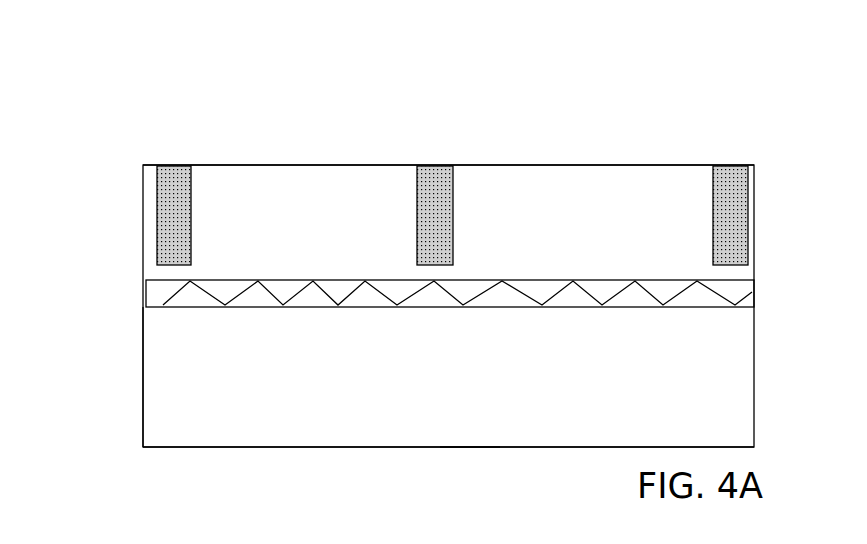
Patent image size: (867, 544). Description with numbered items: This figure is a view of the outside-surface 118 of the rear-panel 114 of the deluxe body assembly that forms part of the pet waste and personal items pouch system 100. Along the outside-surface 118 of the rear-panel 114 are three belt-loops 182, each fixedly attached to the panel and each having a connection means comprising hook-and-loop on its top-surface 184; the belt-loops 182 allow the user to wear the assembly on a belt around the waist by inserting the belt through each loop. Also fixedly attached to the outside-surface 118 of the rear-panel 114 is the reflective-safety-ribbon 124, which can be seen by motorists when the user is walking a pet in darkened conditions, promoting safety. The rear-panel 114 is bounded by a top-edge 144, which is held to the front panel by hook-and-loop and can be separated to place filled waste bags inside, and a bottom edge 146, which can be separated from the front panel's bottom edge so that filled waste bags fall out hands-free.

The pet waste and personal items pouch system 100 is at (648, 100).
The rear-panel 114 is at (175, 373).
The outside-surface 118 is at (258, 408).
The reflective-safety-ribbon 124 is at (157, 295).
The top-edge 144 is at (333, 160).
The bottom edge 146 is at (472, 448).
The belt-loops 182 is at (153, 207).
The top-surface 184 is at (173, 245).